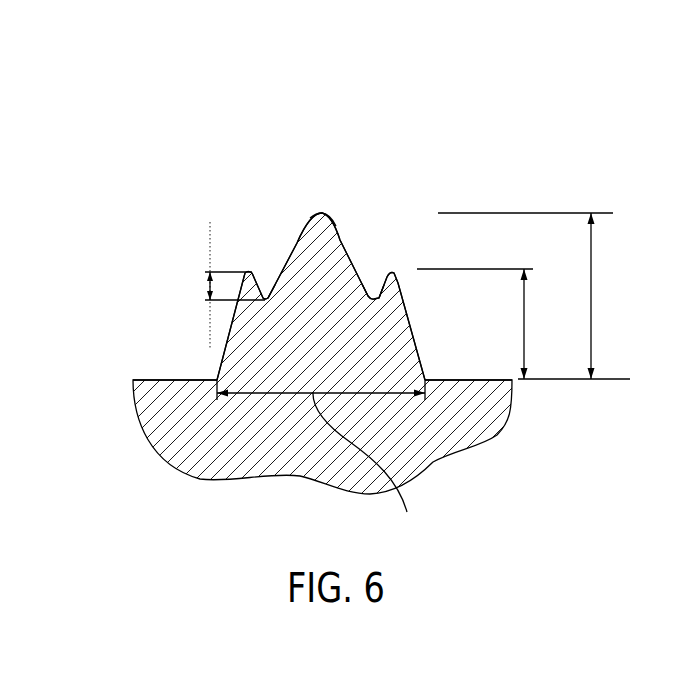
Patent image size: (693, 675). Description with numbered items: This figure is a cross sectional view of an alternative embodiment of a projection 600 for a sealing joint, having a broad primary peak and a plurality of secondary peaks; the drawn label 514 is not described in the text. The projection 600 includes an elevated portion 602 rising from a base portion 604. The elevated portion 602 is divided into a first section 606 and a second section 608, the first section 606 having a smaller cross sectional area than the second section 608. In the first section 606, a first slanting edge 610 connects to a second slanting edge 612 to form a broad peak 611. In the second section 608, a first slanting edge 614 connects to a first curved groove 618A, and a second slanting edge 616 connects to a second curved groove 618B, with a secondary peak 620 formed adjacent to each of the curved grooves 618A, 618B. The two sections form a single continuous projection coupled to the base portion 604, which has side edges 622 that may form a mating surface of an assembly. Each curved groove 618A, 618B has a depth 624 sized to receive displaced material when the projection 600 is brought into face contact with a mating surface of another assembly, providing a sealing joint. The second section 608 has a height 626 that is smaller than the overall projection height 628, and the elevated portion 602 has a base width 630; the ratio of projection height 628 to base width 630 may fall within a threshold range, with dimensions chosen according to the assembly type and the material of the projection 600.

The projection 600 is at (625, 100).
The fin 514 is at (18, 252).
The elevated portion 602 is at (70, 215).
The base portion 604 is at (504, 413).
The first section 606 is at (128, 292).
The second section 608 is at (128, 297).
The first slanting edge 610 is at (298, 242).
The broad peak 611 is at (317, 212).
The second slanting edge 612 is at (350, 250).
The first slanting edge 614 is at (219, 365).
The second slanting edge 616 is at (412, 314).
The first curved groove 618A is at (264, 298).
The second curved groove 618B is at (373, 298).
The secondary peak 620 is at (393, 274).
The side edges 622 is at (467, 376).
The depth 624 is at (208, 284).
The height 626 is at (526, 335).
The projection height 628 is at (593, 281).
The base width 630 is at (321, 462).